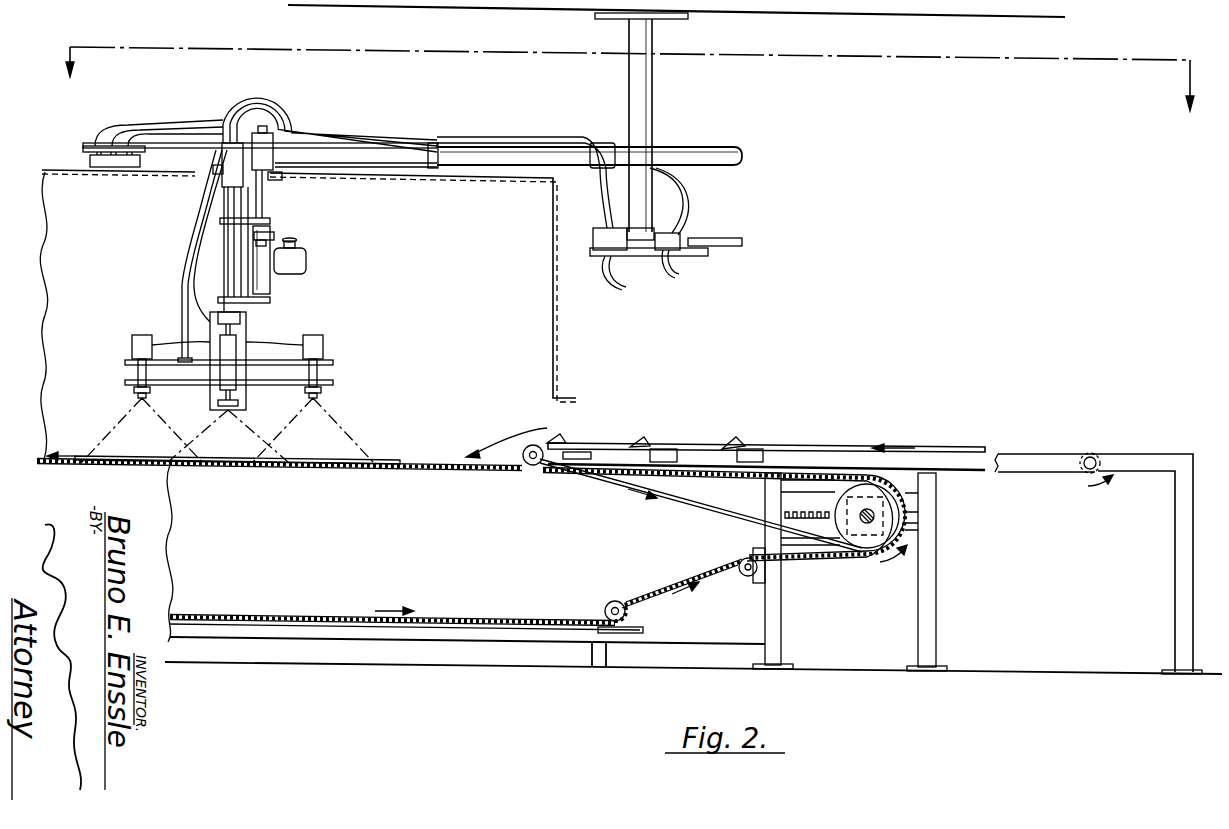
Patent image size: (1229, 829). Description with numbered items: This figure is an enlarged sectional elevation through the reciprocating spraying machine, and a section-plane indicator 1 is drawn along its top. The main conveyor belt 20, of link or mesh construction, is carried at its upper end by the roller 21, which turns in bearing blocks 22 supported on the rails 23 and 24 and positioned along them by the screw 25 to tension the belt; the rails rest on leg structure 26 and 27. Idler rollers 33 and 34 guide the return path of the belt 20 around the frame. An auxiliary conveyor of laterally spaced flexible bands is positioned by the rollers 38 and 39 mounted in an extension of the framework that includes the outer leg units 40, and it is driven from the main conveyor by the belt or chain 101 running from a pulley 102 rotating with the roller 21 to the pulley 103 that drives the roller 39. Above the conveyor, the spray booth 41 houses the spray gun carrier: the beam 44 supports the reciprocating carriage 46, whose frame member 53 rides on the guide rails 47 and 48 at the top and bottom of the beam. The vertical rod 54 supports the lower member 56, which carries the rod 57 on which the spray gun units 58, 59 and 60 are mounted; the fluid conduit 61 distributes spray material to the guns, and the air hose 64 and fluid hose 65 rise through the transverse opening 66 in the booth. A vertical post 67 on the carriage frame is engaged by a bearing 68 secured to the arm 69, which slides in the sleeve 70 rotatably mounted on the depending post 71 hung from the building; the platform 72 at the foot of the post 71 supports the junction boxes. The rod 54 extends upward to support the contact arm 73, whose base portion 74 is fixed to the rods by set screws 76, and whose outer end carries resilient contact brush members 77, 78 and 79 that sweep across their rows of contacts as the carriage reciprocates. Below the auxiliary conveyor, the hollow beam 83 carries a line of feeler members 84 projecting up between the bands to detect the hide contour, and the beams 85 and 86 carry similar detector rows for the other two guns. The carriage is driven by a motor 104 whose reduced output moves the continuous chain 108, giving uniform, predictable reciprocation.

The machine / direction line 1 is at (1194, 118).
The main conveyor belt 20 is at (300, 615).
The roller 21 is at (905, 530).
The bearing blocks 22 is at (905, 500).
The rail 23 is at (793, 490).
The rail 24 is at (787, 538).
The screw 25 is at (820, 520).
The leg structure 26 is at (783, 628).
The leg structure 27 is at (918, 610).
The idler roller 33 is at (745, 578).
The idler roller 34 is at (622, 602).
The roller 38 is at (1097, 456).
The roller 39 is at (540, 428).
The outer leg units 40 is at (1178, 566).
The spray booth structure 41 is at (557, 345).
The beam 44 is at (265, 238).
The reciprocating carriage 46 is at (222, 213).
The guide rail 47 is at (270, 298).
The guide rail 48 is at (268, 231).
The frame member 53 is at (235, 222).
The vertical rod 54 is at (227, 263).
The lower member 56 is at (247, 400).
The rod 57 is at (128, 360).
The spray gun unit 58 is at (138, 336).
The spray gun unit 59 is at (225, 348).
The spray gun unit 60 is at (325, 346).
The fluid conduit 61 is at (128, 383).
The air hose 64 is at (183, 245).
The fluid hose 65 is at (193, 278).
The transverse opening 66 is at (283, 155).
The vertical post 67 is at (273, 180).
The bearing 68 is at (262, 131).
The arm 69 is at (500, 152).
The sleeve 70 is at (673, 152).
The depending post 71 is at (653, 93).
The platform 72 is at (637, 255).
The contact arm 73 is at (160, 152).
The base portion 74 is at (216, 170).
The set screws 76 is at (229, 176).
The resilient contact brush member 77 is at (88, 146).
The resilient contact brush member 78 is at (112, 142).
The resilient contact brush member 79 is at (134, 140).
The hollow beam 83 is at (590, 443).
The feeler members 84 is at (650, 445).
The beam 85 is at (675, 449).
The beam 86 is at (757, 449).
The belt or chain 101 is at (680, 502).
The pulley 102 is at (860, 548).
The pulley 103 is at (528, 468).
The motor 104 is at (300, 258).
The continuous chain 108 is at (262, 244).